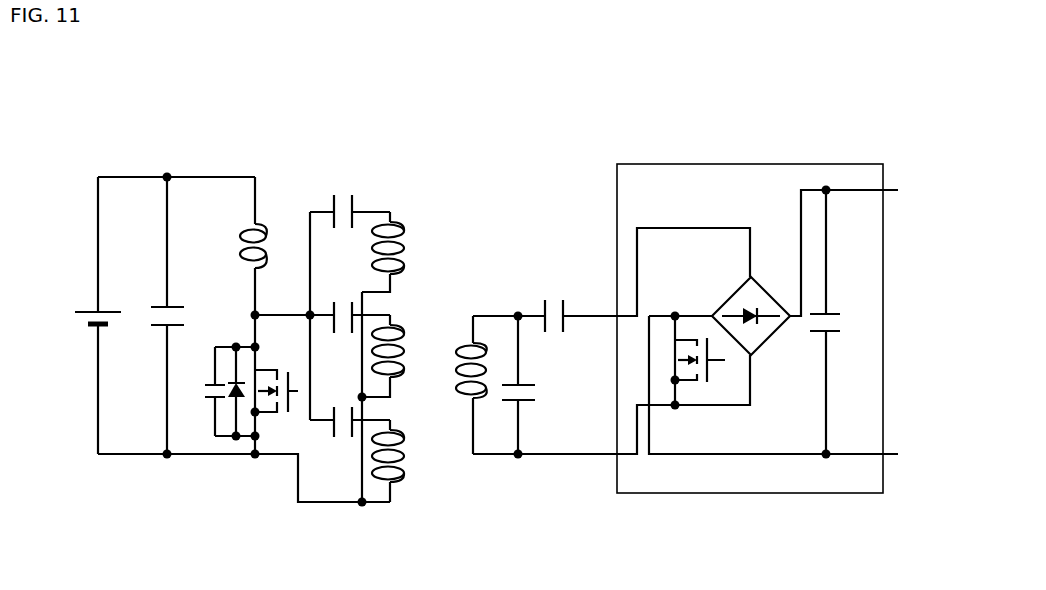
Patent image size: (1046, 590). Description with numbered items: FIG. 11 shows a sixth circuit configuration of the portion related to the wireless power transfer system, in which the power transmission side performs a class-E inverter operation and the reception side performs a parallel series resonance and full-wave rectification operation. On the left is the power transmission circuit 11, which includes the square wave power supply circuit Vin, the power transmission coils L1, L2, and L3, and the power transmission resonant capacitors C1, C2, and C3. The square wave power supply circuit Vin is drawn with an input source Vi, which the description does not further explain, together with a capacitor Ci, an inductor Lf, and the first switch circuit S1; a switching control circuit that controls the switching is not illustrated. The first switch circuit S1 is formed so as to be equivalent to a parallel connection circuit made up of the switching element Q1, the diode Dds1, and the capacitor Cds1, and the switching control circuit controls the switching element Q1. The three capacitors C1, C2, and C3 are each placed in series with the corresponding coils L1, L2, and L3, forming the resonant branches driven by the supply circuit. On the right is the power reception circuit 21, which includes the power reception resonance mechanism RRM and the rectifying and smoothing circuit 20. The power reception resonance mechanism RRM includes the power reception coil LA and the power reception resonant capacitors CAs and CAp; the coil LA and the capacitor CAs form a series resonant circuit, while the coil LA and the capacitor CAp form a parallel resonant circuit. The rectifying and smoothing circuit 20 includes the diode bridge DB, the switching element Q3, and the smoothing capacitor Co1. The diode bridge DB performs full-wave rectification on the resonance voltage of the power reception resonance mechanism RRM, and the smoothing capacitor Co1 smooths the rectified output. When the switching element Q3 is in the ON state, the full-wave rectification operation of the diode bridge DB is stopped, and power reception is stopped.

The power transmission circuit 11 is at (418, 91).
The power reception circuit 21 is at (912, 80).
The rectifying and smoothing circuit 20 is at (873, 163).
The square wave power supply circuit Vin is at (279, 152).
The input DC source Vi is at (90, 302).
The capacitor Ci is at (176, 315).
The inductor Lf is at (240, 262).
The first switch circuit S1 is at (203, 438).
The switching element Q1 is at (275, 377).
The capacitor Cds1 is at (197, 388).
The diode Dds1 is at (229, 417).
The power transmission resonant capacitor C1 is at (350, 197).
The power transmission resonant capacitor C2 is at (350, 303).
The power transmission resonant capacitor C3 is at (350, 408).
The power transmission coil L1 is at (395, 243).
The power transmission coil L2 is at (395, 349).
The power transmission coil L3 is at (400, 454).
The power reception coil LA is at (455, 385).
The power reception resonant capacitor CAs is at (540, 302).
The power reception resonant capacitor CAp is at (545, 385).
The power reception resonance mechanism RRM is at (507, 470).
The diode bridge DB is at (737, 312).
The switching element Q3 is at (703, 361).
The smoothing capacitor Co1 is at (842, 322).